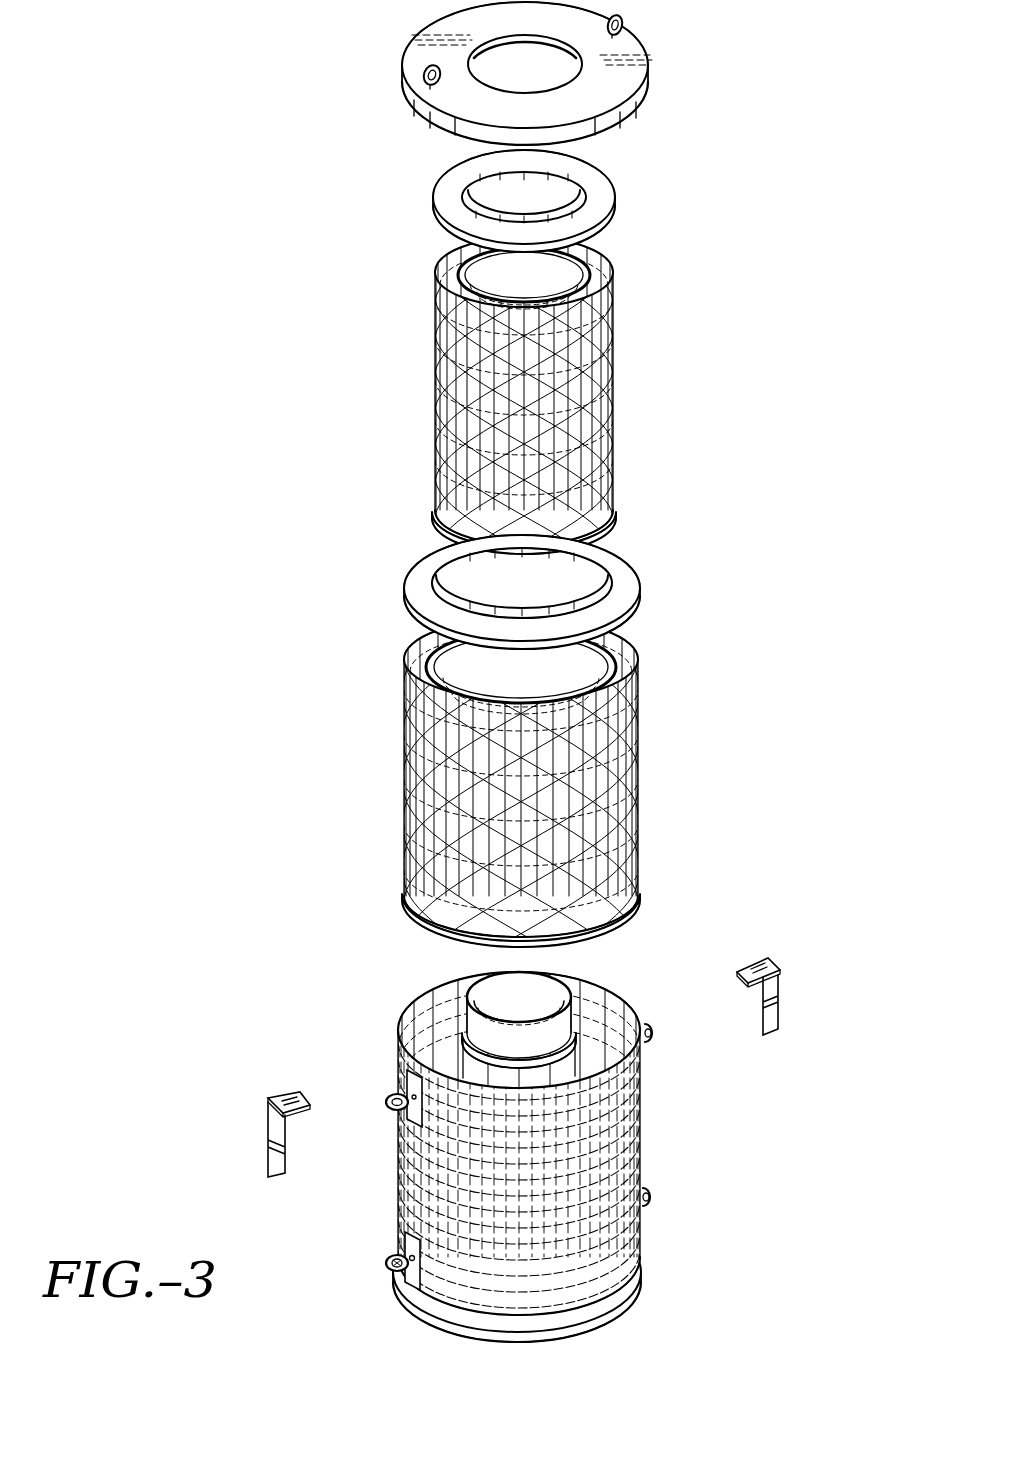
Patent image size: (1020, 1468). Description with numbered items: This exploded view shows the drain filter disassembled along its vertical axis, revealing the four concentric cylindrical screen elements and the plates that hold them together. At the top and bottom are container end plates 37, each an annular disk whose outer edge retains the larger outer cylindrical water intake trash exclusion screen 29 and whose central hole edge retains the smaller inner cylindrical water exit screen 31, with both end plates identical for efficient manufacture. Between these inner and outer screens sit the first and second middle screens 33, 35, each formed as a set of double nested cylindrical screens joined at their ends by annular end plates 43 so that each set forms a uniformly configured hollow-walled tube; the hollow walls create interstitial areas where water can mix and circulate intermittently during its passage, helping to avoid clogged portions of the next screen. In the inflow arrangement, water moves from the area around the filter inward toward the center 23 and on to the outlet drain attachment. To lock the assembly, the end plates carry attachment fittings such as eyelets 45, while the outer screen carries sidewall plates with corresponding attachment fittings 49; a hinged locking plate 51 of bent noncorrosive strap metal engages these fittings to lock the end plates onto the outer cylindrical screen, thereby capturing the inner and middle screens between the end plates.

The center of the filter 23 is at (484, 998).
The water intake trash exclusion screen 29 is at (641, 1134).
The water exit screen 31 is at (583, 1050).
The first middle screen 33 is at (640, 750).
The second middle screen 35 is at (613, 398).
The container end plate 37 is at (420, 58).
The annular end plates 43 is at (600, 178).
The eyelets 45 is at (623, 25).
The attachment fittings 49 is at (390, 1100).
The hinged locking plate 51 is at (779, 1000).